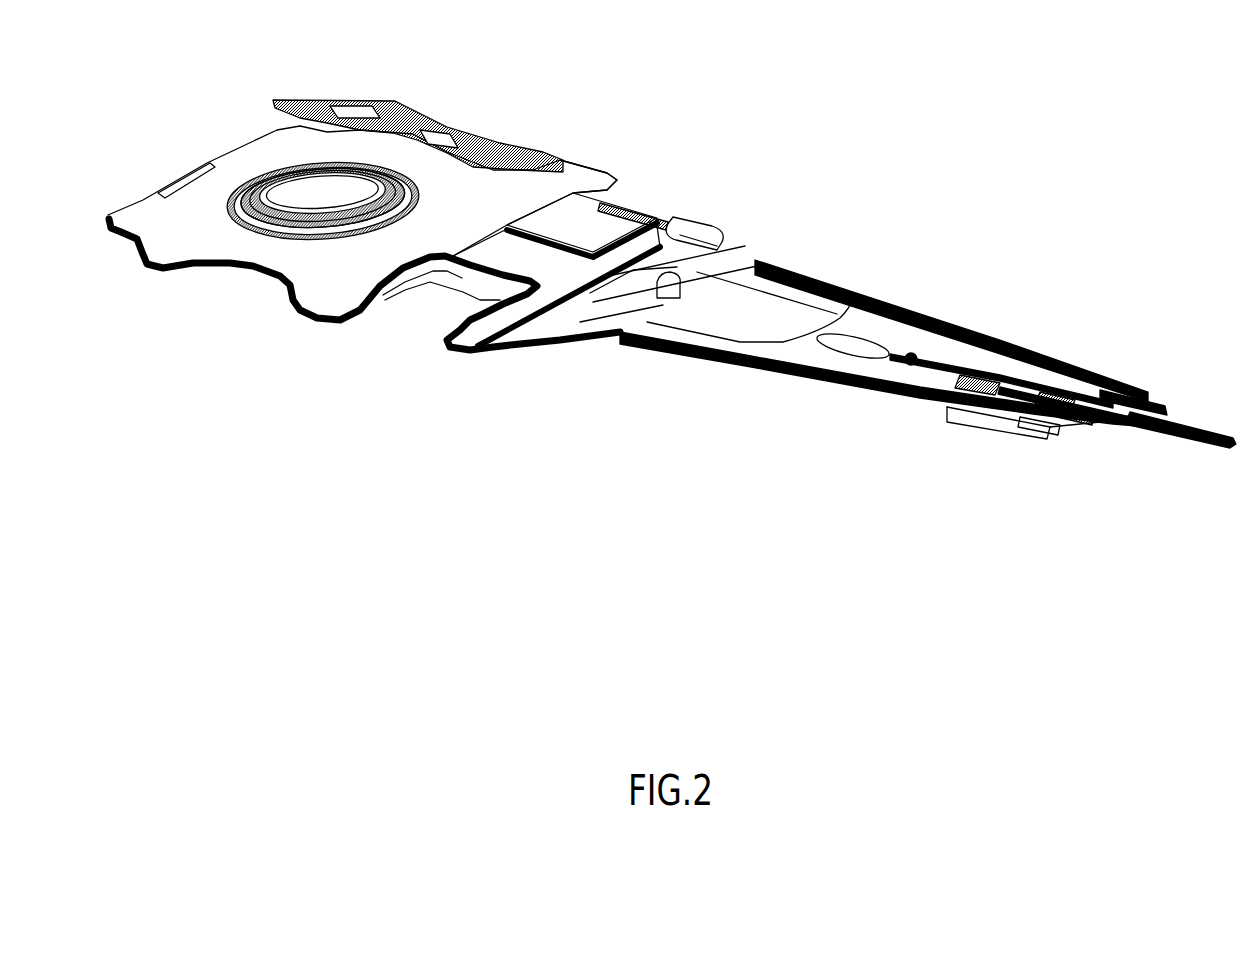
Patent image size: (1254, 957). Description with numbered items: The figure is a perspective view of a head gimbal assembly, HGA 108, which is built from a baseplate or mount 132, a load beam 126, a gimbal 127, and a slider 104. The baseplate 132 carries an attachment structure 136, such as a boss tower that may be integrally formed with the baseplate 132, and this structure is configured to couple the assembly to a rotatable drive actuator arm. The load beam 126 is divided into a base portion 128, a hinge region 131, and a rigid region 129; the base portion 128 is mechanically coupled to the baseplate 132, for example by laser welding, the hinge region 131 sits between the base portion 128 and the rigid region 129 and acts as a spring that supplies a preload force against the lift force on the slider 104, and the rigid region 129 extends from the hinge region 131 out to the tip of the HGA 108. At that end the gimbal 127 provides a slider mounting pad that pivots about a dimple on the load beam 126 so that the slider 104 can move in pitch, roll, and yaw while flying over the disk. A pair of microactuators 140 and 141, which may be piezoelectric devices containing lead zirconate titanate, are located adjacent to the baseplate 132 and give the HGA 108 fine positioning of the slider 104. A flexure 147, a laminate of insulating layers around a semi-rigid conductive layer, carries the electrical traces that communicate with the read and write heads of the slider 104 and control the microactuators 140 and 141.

The slider 104 is at (1033, 432).
The HGA 108 is at (900, 200).
The load beam 126 is at (942, 360).
The gimbal 127 is at (968, 413).
The base portion 128 is at (560, 325).
The rigid region 129 is at (873, 328).
The hinge region 131 is at (755, 260).
The baseplate 132 is at (580, 172).
The attachment structure 136 is at (277, 170).
The microactuator 140 is at (402, 306).
The microactuator 141 is at (613, 227).
The flexure 147 is at (458, 128).